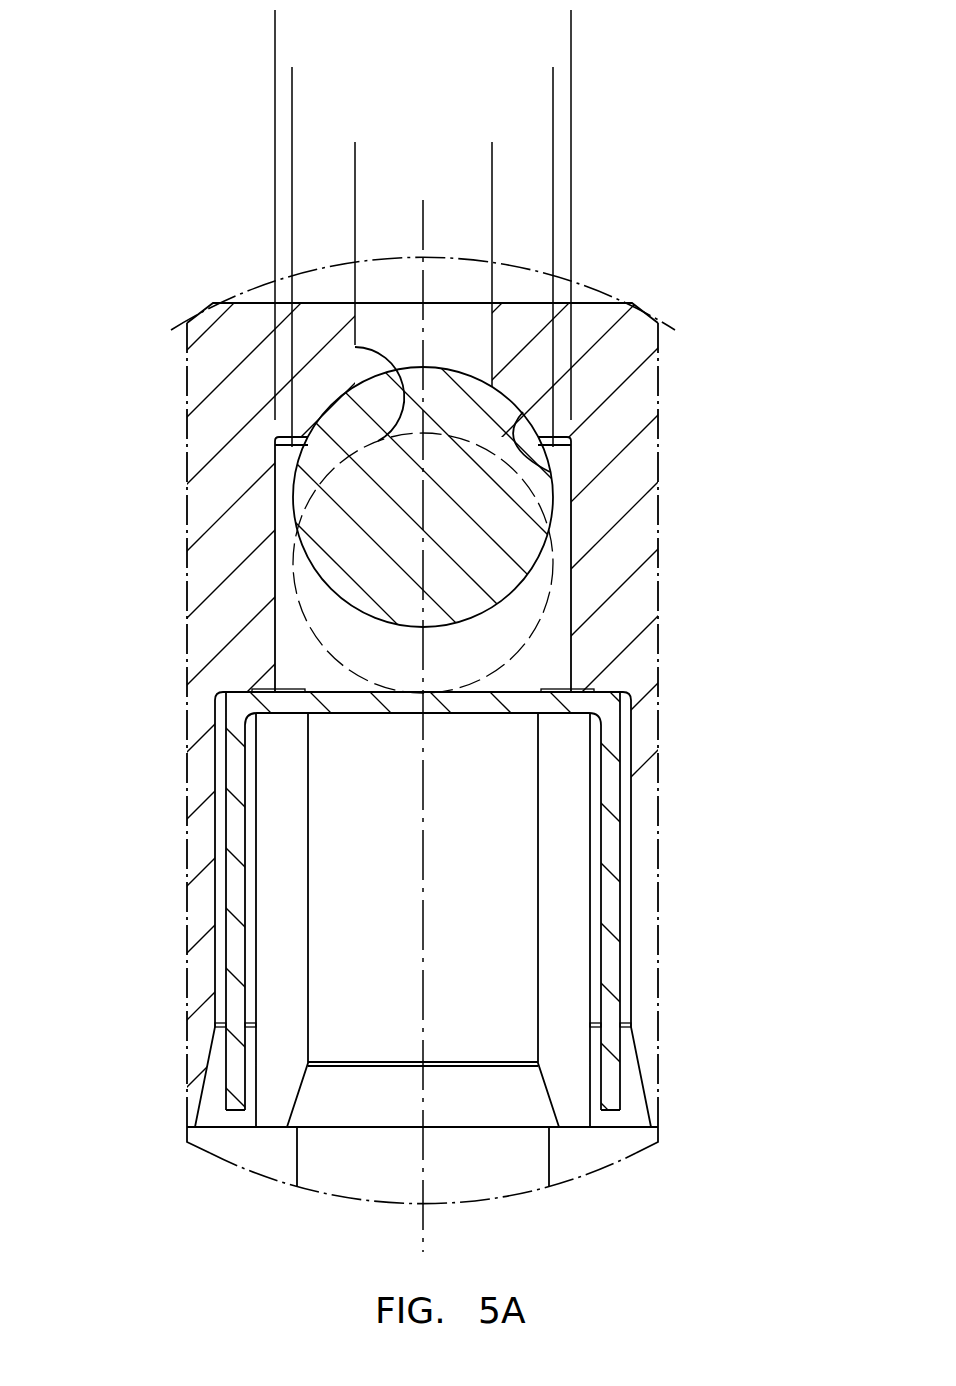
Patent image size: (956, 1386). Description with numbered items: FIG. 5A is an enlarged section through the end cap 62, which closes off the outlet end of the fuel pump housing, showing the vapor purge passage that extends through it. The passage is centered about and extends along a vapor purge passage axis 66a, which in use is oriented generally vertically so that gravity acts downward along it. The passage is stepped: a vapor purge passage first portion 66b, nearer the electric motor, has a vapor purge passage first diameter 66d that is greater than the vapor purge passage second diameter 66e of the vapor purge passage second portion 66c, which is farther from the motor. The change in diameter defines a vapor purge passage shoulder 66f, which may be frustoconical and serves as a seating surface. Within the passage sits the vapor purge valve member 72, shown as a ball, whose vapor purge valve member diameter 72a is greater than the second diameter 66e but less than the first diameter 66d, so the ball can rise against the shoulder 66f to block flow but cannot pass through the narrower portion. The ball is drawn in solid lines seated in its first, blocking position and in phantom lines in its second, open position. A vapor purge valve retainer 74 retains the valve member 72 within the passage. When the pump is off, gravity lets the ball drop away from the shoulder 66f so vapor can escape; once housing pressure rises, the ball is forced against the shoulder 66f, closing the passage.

The end cap 62 is at (628, 348).
The vapor purge passage axis 66a is at (423, 1232).
The vapor purge passage first portion 66b is at (287, 833).
The vapor purge passage second portion 66c is at (310, 463).
The vapor purge passage first diameter 66d is at (571, 32).
The vapor purge passage second diameter 66e is at (492, 163).
The vapor purge passage shoulder 66f is at (550, 472).
The vapor purge valve member 72 is at (525, 543).
The vapor purge valve member diameter 72a is at (553, 88).
The vapor purge valve retainer 74 is at (607, 836).